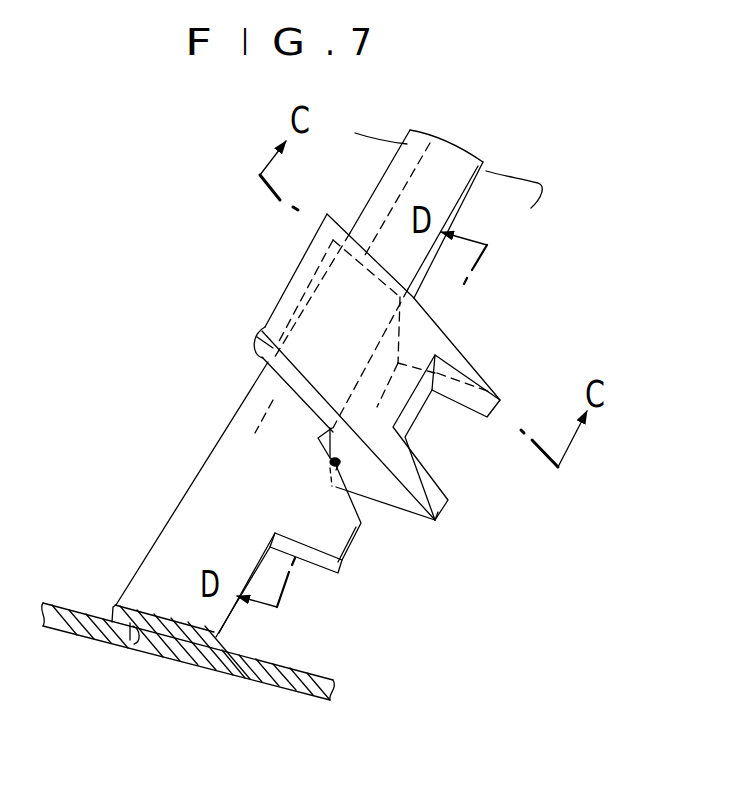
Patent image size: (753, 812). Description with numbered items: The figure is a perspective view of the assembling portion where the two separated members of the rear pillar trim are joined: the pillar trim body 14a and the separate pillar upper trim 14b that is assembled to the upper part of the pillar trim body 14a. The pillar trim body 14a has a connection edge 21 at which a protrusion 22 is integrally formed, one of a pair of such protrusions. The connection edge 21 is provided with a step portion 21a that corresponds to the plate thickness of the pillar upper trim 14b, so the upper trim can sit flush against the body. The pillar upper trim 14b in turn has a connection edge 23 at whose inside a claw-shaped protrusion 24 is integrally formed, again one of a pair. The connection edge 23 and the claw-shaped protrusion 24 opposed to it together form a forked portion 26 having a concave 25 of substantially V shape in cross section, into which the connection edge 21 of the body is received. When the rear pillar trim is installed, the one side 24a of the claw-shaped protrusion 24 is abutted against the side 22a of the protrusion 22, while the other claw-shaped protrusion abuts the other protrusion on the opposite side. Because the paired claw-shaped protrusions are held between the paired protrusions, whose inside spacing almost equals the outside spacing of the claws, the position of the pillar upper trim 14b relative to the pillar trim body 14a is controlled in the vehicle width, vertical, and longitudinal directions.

The pillar trim body 14a is at (82, 591).
The pillar upper trim 14b is at (357, 653).
The connection edge 21 is at (273, 440).
The step portion 21a is at (140, 645).
The protrusion 22 is at (333, 533).
The side of protrusion 22a is at (330, 458).
The connection edge 23 is at (257, 640).
The claw-shaped protrusion 24 is at (348, 266).
The side of claw-shaped protrusion 24a is at (343, 435).
The concave 25 is at (265, 326).
The forked portion 26 is at (381, 352).